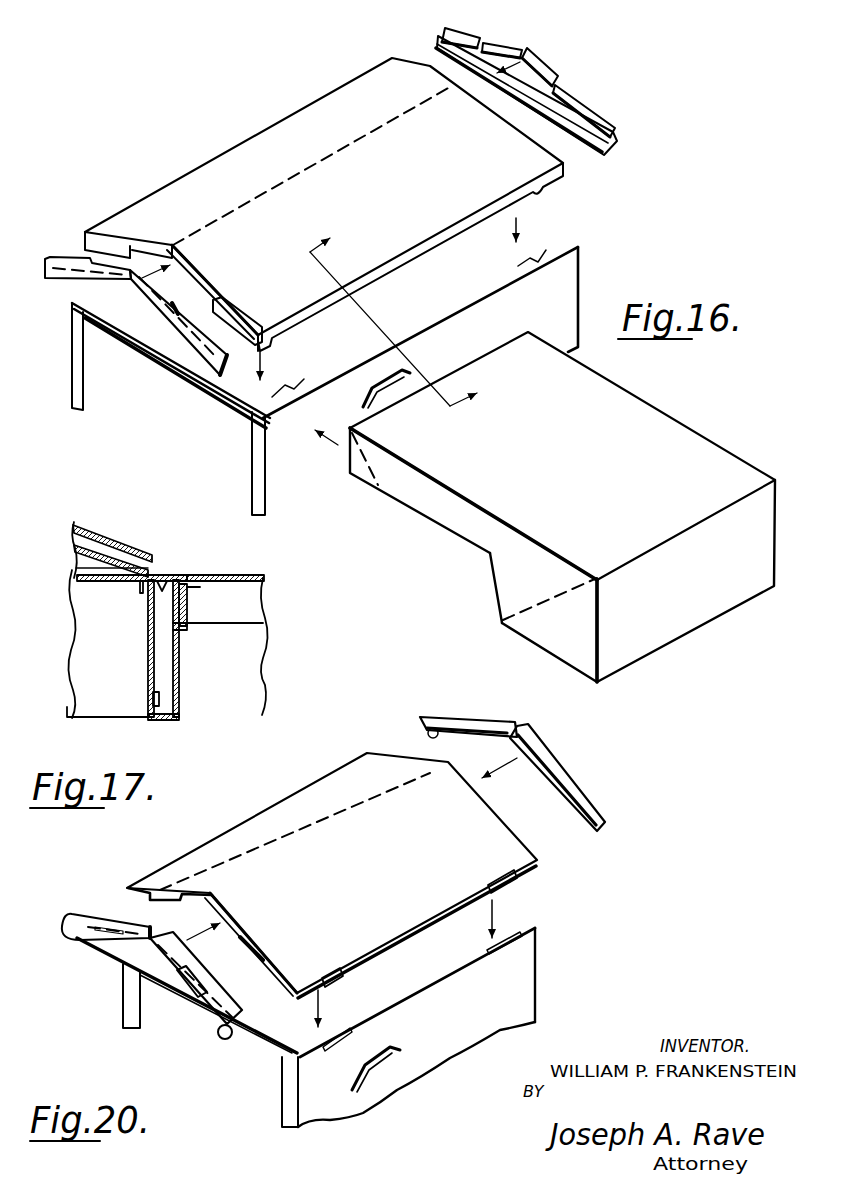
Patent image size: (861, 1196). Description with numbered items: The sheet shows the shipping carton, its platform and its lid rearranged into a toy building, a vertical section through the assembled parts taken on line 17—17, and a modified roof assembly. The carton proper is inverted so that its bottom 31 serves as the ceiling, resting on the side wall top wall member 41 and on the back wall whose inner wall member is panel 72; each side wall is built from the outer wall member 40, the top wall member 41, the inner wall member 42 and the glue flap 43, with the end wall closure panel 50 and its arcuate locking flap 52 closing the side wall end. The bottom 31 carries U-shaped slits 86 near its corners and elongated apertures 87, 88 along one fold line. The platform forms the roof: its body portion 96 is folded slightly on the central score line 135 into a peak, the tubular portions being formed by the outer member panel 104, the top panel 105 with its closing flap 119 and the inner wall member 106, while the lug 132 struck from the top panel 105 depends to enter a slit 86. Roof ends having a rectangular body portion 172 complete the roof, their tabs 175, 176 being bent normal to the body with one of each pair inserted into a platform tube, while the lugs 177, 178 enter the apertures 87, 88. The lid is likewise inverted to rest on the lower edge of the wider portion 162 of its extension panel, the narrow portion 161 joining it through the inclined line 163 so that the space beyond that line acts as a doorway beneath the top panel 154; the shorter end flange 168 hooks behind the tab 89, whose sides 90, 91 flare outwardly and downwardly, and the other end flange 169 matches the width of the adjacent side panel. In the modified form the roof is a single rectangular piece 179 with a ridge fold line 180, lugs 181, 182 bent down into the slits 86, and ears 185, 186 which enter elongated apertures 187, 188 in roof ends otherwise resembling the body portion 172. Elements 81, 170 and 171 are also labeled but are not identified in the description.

In FIG. 16, the section line 17 is at (382, 329).
In FIG. 16, the bottom panel 31 is at (422, 300).
In FIG. 17, the bottom panel 31 is at (100, 581).
In FIG. 20, the bottom panel 31 is at (427, 954).
In FIG. 16, the side wall outer wall member 40 is at (288, 490).
In FIG. 17, the side wall outer wall member 40 is at (180, 680).
In FIG. 20, the side wall outer wall member 40 is at (480, 1033).
In FIG. 17, the side wall top wall member 41 is at (164, 721).
In FIG. 16, the side wall inner wall member 42 is at (147, 368).
In FIG. 17, the side wall inner wall member 42 is at (147, 655).
In FIG. 17, the glue flap 43 is at (170, 578).
In FIG. 16, the side wall end wall closure panel 50 is at (74, 412).
In FIG. 20, the side wall end wall closure panel 50 is at (125, 1029).
In FIG. 16, the locking flap 52 is at (118, 383).
In FIG. 20, the locking flap 52 is at (168, 1004).
In FIG. 17, the end wall inner wall member 72 is at (100, 717).
In FIG. 17, the stop block 81 is at (160, 700).
In FIG. 16, the U-shaped slit 86 is at (403, 307).
In FIG. 20, the U-shaped slit 86 is at (487, 950).
In FIG. 16, the elongated aperture 87 is at (127, 338).
In FIG. 16, the elongated aperture 88 is at (212, 392).
In FIG. 20, the elongated aperture 88 is at (297, 1052).
In FIG. 16, the tab 89 is at (380, 388).
In FIG. 17, the tab 89 is at (190, 610).
In FIG. 20, the tab 89 is at (385, 1055).
In FIG. 16, the flaring side 90 is at (364, 400).
In FIG. 20, the flaring side 90 is at (353, 1072).
In FIG. 16, the flaring side 91 is at (424, 372).
In FIG. 20, the flaring side 91 is at (404, 1056).
In FIG. 16, the platform body portion 96 is at (377, 194).
In FIG. 17, the platform body portion 96 is at (120, 543).
In FIG. 16, the tubular outer member panel 104 is at (320, 308).
In FIG. 17, the tubular outer member panel 104 is at (150, 566).
In FIG. 17, the tube top panel 105 is at (76, 556).
In FIG. 16, the tube inner wall member panel 106 is at (172, 245).
In FIG. 16, the tubular closing flap 119 is at (120, 238).
In FIG. 16, the lug 132 is at (536, 197).
In FIG. 17, the lug 132 is at (141, 594).
In FIG. 16, the central score line 135 is at (262, 192).
In FIG. 16, the cover top panel 154 is at (560, 464).
In FIG. 17, the cover top panel 154 is at (236, 575).
In FIG. 16, the narrow portion 161 is at (428, 510).
In FIG. 17, the narrow portion 161 is at (220, 623).
In FIG. 16, the wider portion 162 is at (538, 637).
In FIG. 16, the inclined line 163 is at (494, 600).
In FIG. 17, the end flange 168 is at (200, 587).
In FIG. 16, the end flange 169 is at (668, 633).
In FIG. 16, the tray hidden edge 170 is at (372, 470).
In FIG. 16, the tray hidden bottom edge 171 is at (553, 580).
In FIG. 16, the roof end body portion 172 is at (615, 145).
In FIG. 17, the roof end body portion 172 is at (75, 572).
In FIG. 20, the roof end body portion 172 is at (520, 772).
In FIG. 16, the tab 175 is at (486, 42).
In FIG. 16, the tab 176 is at (558, 78).
In FIG. 20, the lug 177 is at (222, 1040).
In FIG. 20, the lug 178 is at (73, 942).
In FIG. 20, the roof piece 179 is at (377, 886).
In FIG. 20, the ridge fold line 180 is at (370, 808).
In FIG. 20, the lug 181 is at (350, 980).
In FIG. 20, the lug 182 is at (518, 886).
In FIG. 20, the lug 185 is at (262, 950).
In FIG. 20, the lug 186 is at (178, 892).
In FIG. 20, the elongated aperture 187 is at (480, 722).
In FIG. 20, the elongated aperture 188 is at (100, 916).